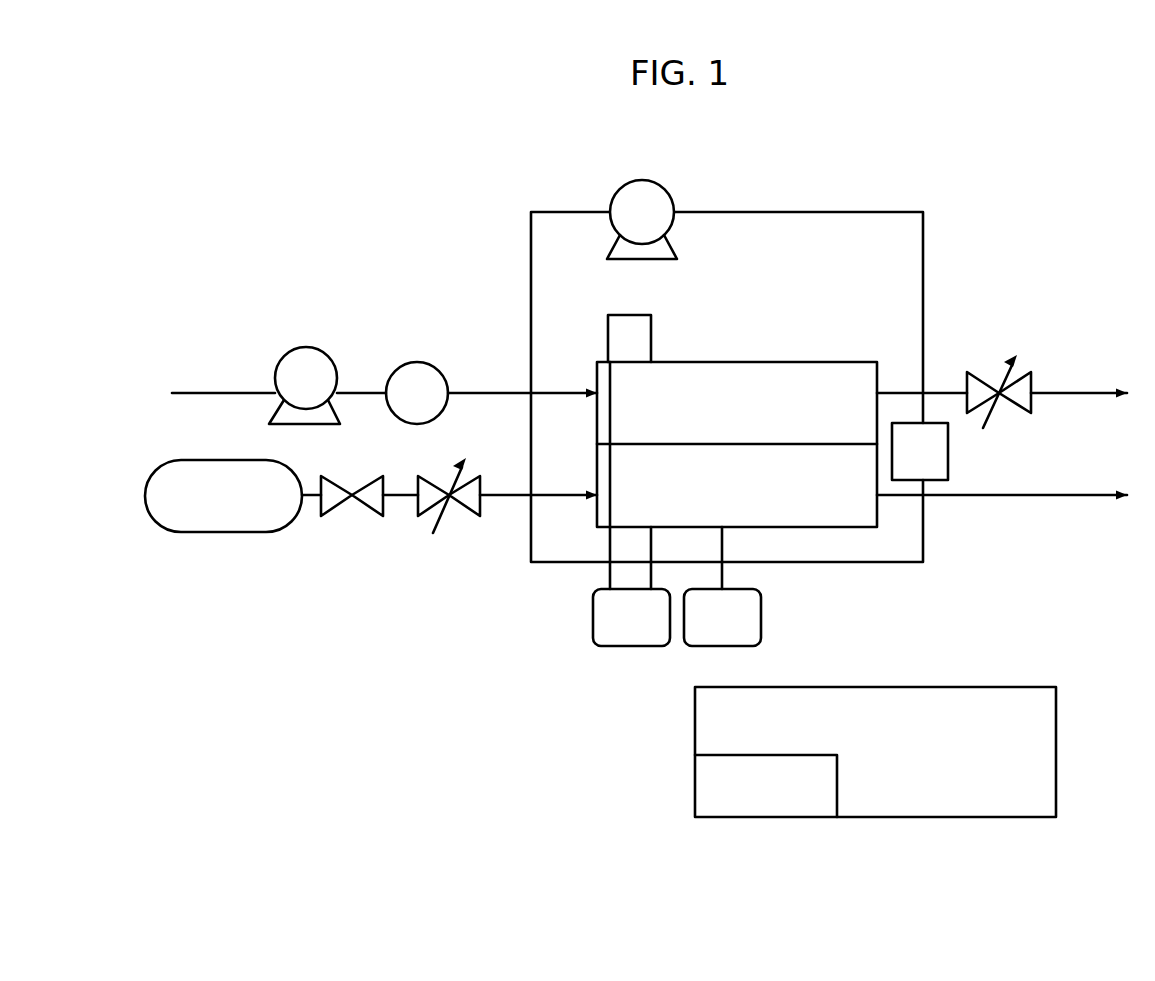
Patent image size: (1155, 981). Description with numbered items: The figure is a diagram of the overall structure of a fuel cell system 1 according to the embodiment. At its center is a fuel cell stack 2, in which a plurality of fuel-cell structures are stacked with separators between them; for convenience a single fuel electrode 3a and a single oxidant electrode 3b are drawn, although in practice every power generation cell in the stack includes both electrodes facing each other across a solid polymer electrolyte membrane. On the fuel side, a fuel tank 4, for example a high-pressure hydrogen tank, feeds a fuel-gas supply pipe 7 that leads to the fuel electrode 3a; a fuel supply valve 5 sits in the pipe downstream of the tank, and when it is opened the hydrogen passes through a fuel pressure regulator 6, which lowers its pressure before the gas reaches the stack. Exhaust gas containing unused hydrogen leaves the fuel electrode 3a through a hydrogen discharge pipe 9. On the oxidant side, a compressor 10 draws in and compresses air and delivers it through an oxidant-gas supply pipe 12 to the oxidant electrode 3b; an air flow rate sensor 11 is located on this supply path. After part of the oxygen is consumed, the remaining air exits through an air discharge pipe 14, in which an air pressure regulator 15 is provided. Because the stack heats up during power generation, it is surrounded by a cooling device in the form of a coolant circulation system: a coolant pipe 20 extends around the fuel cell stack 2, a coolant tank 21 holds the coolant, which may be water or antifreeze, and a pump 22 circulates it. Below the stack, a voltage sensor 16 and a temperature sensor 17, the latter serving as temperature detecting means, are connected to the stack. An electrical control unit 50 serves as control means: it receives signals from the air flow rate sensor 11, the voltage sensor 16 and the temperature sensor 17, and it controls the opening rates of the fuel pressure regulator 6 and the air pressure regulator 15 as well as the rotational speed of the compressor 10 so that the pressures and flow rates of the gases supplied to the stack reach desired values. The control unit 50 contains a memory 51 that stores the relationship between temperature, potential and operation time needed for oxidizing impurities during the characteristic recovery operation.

The fuel cell system 1 is at (288, 186).
The fuel cell stack 2 is at (737, 454).
The fuel electrode 3a is at (852, 507).
The oxidant electrode 3b is at (723, 375).
The fuel tank 4 is at (222, 532).
The fuel supply valve 5 is at (350, 516).
The fuel pressure regulator 6 is at (457, 516).
The fuel-gas supply pipe 7 is at (499, 497).
The hydrogen discharge pipe 9 is at (1065, 497).
The compressor 10 is at (305, 348).
The air flow rate sensor 11 is at (418, 362).
The oxidant-gas supply pipe 12 is at (477, 393).
The air discharge pipe 14 is at (1073, 393).
The air pressure regulator 15 is at (996, 372).
The voltage sensor 16 is at (633, 647).
The temperature sensor 17 is at (761, 615).
The coolant pipe 20 is at (834, 212).
The coolant tank 21 is at (948, 455).
The pump 22 is at (641, 180).
The electrical control unit 50 is at (875, 776).
The memory 51 is at (757, 818).